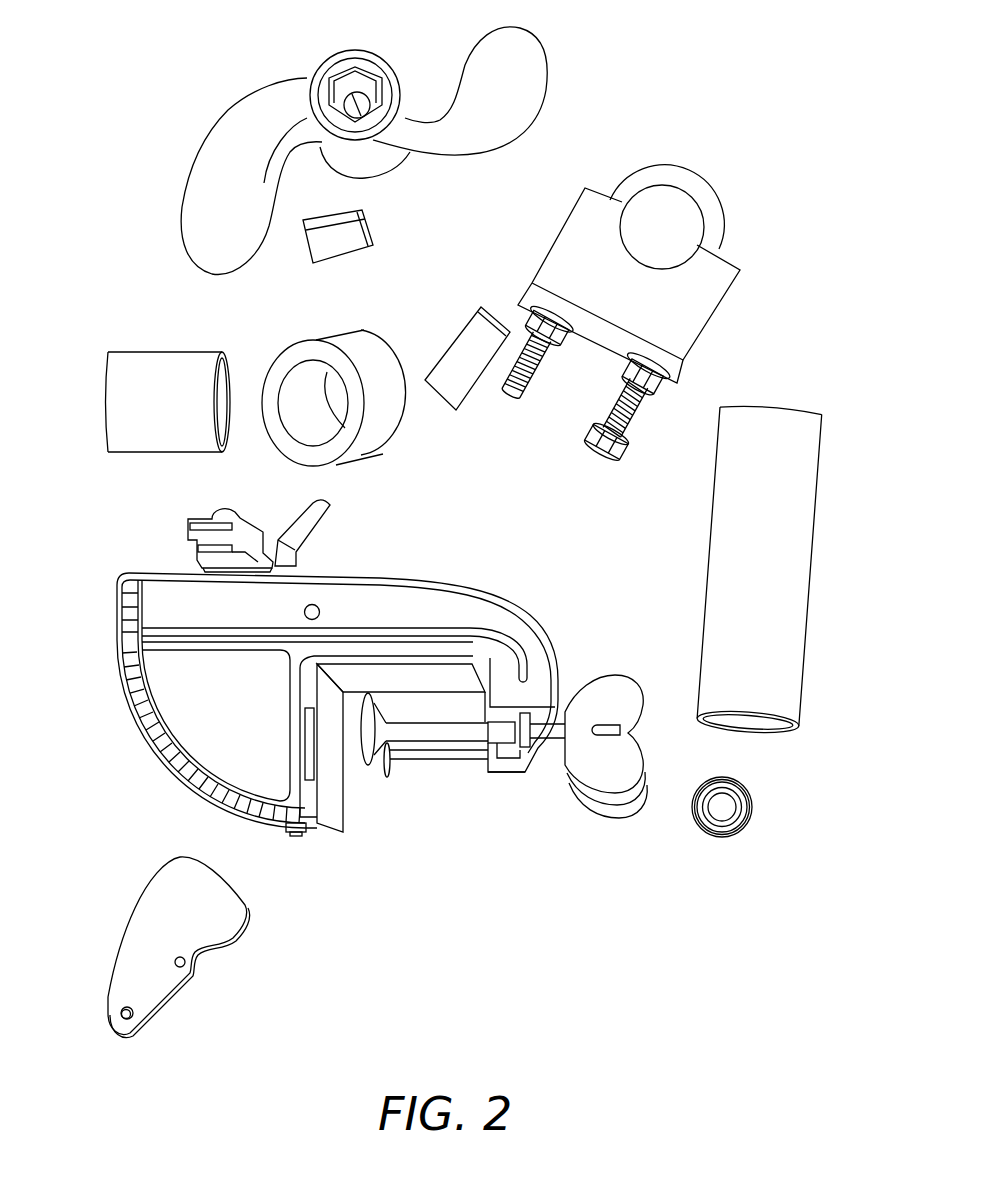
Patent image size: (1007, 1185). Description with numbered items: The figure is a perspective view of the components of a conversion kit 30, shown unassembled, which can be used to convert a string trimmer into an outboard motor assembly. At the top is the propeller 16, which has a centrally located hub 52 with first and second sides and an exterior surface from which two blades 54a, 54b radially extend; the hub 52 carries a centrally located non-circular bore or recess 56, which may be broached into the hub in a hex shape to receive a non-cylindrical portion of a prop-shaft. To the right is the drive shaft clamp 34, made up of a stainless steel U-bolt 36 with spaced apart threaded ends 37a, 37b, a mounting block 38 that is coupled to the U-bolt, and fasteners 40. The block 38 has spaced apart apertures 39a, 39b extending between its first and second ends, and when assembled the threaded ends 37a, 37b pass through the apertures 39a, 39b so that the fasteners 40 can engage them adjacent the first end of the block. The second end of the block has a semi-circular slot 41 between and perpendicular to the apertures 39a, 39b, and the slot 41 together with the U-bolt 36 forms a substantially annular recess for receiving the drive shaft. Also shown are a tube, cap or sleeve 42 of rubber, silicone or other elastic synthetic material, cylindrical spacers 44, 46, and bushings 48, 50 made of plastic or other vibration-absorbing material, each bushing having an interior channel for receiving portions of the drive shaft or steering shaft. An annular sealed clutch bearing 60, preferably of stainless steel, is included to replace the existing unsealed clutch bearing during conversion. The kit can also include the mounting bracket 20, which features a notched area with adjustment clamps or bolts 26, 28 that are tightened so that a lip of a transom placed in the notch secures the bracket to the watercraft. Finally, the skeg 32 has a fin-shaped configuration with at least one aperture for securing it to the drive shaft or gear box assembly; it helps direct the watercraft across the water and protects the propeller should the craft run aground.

The propeller 16 is at (357, 142).
The hub 52 is at (368, 62).
The non-circular bore or recess 56 is at (350, 90).
The blade 54a is at (200, 182).
The blade 54b is at (518, 40).
The cylindrical spacer 46 is at (300, 243).
The bushing 48 is at (113, 400).
The cylindrical spacer 44 is at (273, 440).
The tube, cap or sleeve 42 is at (453, 338).
The drive shaft clamp 34 is at (648, 252).
The U-bolt 36 is at (718, 218).
The semi-circular slot 41 is at (643, 260).
The mounting block 38 is at (680, 317).
The aperture 39a is at (528, 300).
The aperture 39b is at (655, 368).
The threaded end 37a is at (496, 331).
The threaded end 37b is at (651, 398).
The fasteners 40 is at (660, 390).
The bushing 50 is at (802, 612).
The annular sealed clutch bearing 60 is at (747, 807).
The bracket 20 is at (359, 700).
The adjustment clamp or bolt 28 is at (122, 596).
The adjustment clamp or bolt 26 is at (437, 723).
The conversion kit 30 is at (483, 779).
The skeg 32 is at (224, 940).